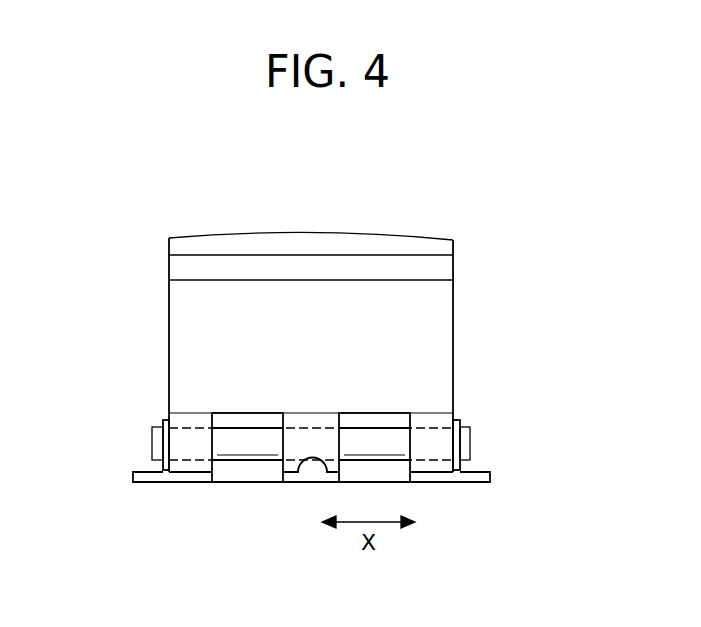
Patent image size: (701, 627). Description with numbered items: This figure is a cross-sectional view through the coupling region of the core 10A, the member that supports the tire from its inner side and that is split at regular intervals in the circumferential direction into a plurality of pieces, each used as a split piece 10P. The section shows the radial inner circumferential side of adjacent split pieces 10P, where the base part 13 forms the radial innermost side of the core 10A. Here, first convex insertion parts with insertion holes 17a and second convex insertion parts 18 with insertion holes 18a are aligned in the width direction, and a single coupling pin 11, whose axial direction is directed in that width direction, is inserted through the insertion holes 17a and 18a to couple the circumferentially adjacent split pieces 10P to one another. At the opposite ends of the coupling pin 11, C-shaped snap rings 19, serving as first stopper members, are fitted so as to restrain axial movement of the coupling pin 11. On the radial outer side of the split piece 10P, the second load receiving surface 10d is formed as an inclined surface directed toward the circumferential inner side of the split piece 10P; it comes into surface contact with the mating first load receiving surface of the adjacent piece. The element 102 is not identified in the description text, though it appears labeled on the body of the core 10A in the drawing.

The split piece 10P is at (241, 232).
The second load receiving surface 10d is at (172, 262).
The core 10A is at (458, 272).
The housing body 102 is at (432, 322).
The C-shaped snap ring 19 is at (165, 420).
The coupling pin 11 is at (152, 445).
The base part 13 is at (490, 478).
The second convex insertion part 18 is at (197, 468).
The insertion hole 18a is at (186, 448).
The insertion hole 17a is at (259, 456).